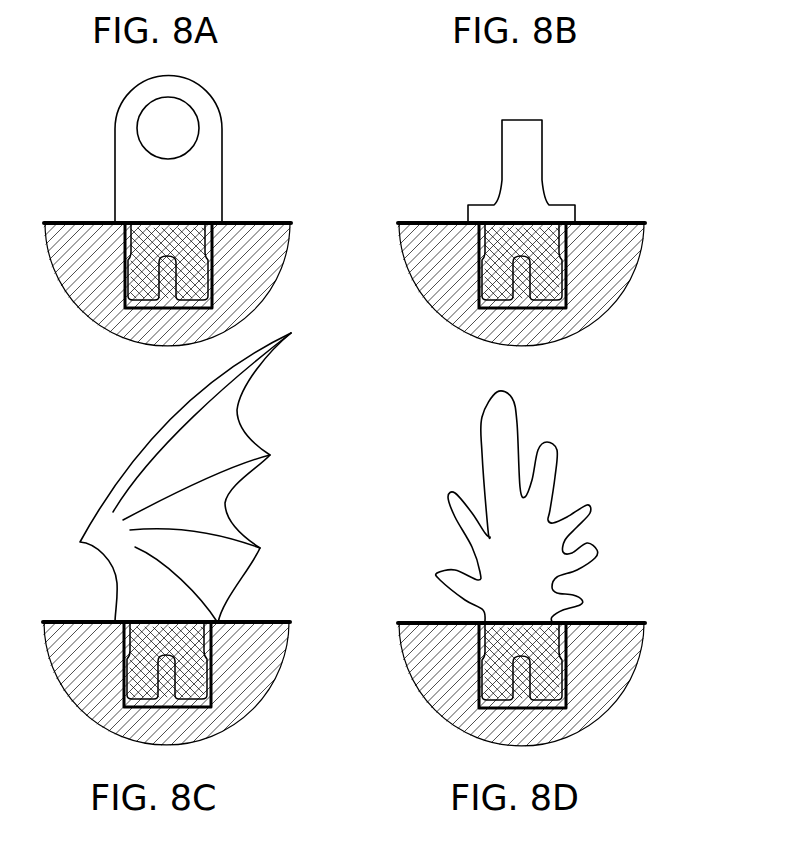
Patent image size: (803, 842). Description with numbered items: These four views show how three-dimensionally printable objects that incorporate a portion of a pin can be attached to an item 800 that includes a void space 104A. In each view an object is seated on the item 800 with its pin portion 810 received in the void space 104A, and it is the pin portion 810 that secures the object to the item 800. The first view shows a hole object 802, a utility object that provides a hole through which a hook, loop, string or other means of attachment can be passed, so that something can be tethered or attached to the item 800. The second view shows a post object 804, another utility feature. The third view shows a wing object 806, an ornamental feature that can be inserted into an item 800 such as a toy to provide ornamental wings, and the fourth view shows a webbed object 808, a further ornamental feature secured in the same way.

In FIG. 8A, the item 800 is at (290, 233).
In FIG. 8B, the item 800 is at (638, 230).
In FIG. 8C, the item 800 is at (288, 638).
In FIG. 8D, the item 800 is at (635, 638).
In FIG. 8A, the hole object 802 is at (222, 142).
In FIG. 8B, the post object 804 is at (542, 148).
In FIG. 8C, the wing object 806 is at (270, 455).
In FIG. 8D, the webbed object 808 is at (592, 513).
In FIG. 8A, the pin portion 810 is at (207, 287).
In FIG. 8B, the pin portion 810 is at (562, 287).
In FIG. 8C, the pin portion 810 is at (207, 685).
In FIG. 8D, the pin portion 810 is at (562, 685).
In FIG. 8A, the void space 104A is at (122, 312).
In FIG. 8B, the void space 104A is at (478, 312).
In FIG. 8C, the void space 104A is at (122, 712).
In FIG. 8D, the void space 104A is at (477, 712).